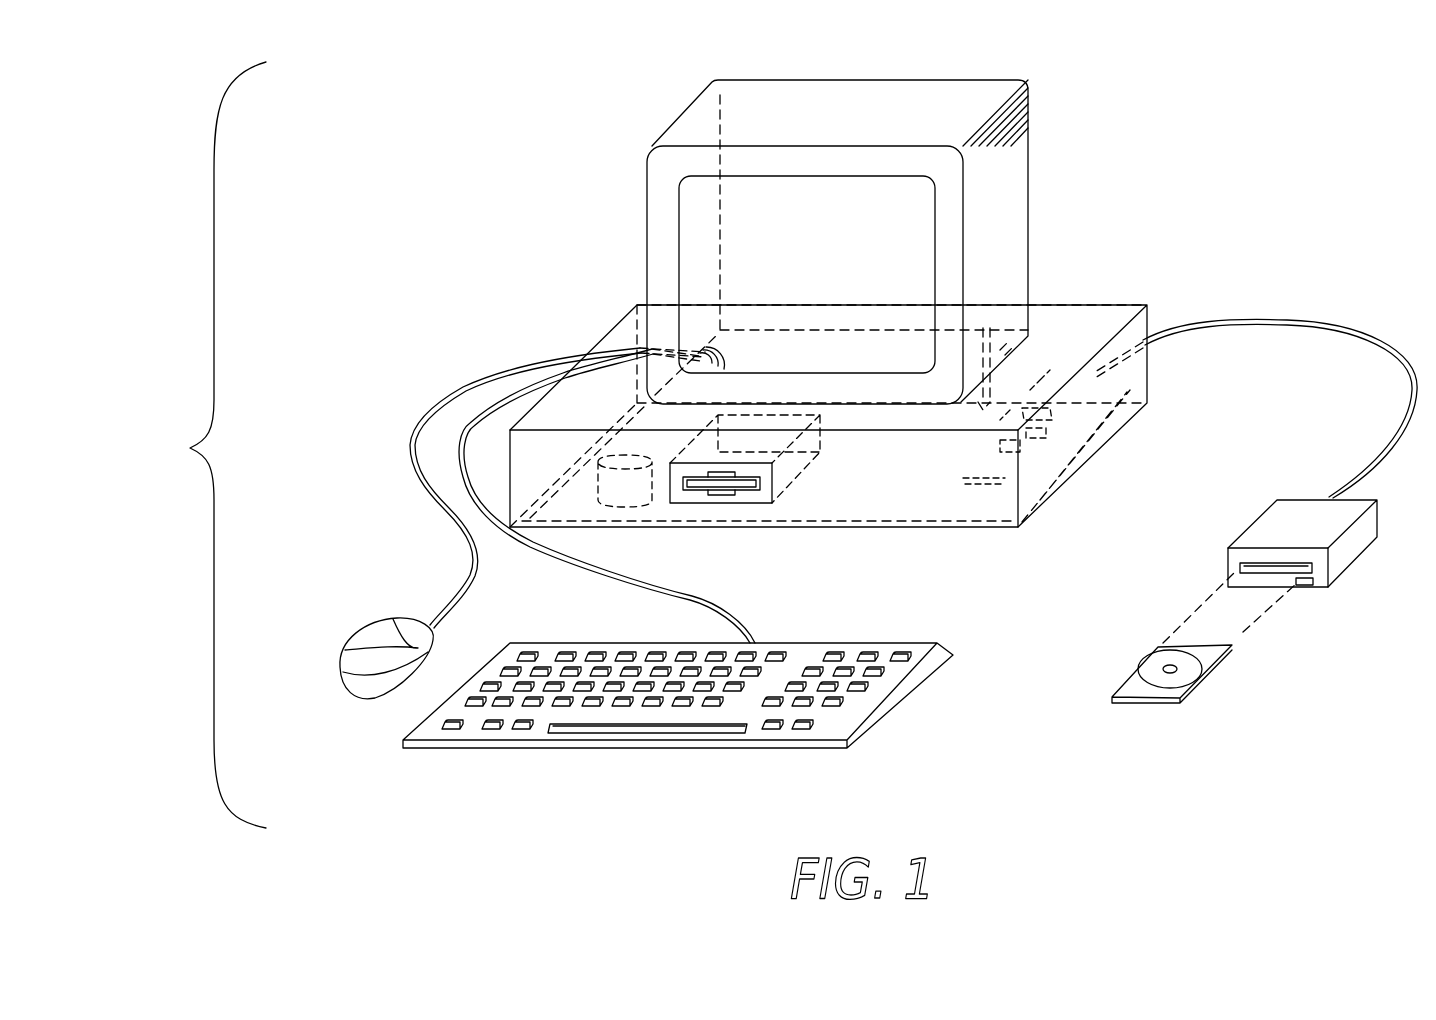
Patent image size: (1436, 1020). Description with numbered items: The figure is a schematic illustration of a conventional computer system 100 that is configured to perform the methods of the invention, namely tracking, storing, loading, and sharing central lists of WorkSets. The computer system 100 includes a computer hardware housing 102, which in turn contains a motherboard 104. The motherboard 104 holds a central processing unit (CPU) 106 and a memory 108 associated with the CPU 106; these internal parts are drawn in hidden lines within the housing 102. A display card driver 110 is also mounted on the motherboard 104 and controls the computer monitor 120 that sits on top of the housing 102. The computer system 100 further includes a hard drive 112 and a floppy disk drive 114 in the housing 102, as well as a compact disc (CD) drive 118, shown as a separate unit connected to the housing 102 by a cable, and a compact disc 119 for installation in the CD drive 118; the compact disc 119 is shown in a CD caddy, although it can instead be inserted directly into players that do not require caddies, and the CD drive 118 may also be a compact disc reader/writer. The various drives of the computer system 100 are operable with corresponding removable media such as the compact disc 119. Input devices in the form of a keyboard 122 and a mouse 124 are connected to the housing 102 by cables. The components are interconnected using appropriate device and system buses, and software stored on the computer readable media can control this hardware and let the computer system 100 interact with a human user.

The computer system 100 is at (200, 445).
The computer hardware housing 102 is at (1147, 403).
The motherboard 104 is at (1110, 393).
The central processing unit (CPU) 106 is at (1005, 445).
The memory 108 is at (977, 463).
The display card driver 110 is at (1013, 330).
The hard drive 112 is at (632, 505).
The floppy disk drive 114 is at (747, 498).
The compact disc (CD) drive 118 is at (1278, 528).
The compact disc 119 is at (1155, 667).
The computer monitor 120 is at (1015, 158).
The keyboard 122 is at (927, 650).
The mouse 124 is at (368, 655).